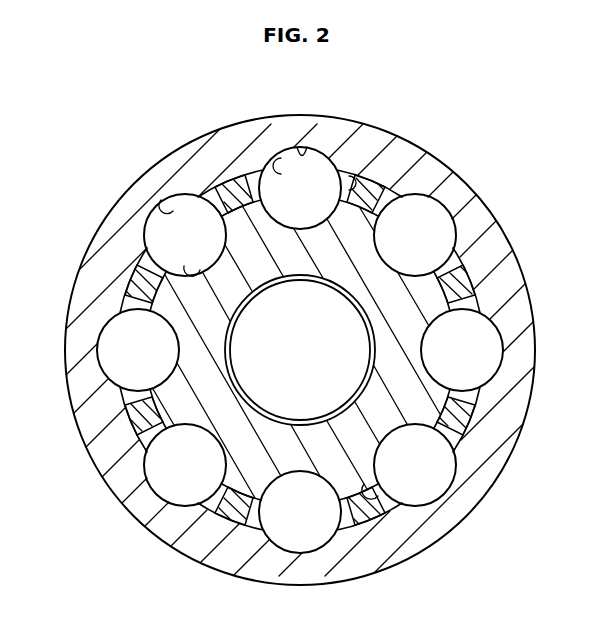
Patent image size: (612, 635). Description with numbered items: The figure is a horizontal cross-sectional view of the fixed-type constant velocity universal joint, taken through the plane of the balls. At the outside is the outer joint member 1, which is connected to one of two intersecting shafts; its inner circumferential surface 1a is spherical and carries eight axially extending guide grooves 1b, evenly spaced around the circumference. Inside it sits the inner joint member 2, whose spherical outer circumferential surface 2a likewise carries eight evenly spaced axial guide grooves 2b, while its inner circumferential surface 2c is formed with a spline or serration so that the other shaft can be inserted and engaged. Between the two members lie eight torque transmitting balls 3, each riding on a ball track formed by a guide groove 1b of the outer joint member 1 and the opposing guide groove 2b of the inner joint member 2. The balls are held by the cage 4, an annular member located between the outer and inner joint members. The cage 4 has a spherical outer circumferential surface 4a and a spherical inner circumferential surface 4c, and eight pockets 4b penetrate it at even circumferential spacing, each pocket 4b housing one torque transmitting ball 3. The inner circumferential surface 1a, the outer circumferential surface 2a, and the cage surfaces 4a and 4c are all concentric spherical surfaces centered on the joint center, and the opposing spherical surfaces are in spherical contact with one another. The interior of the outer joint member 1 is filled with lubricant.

The outer joint member 1 is at (188, 140).
The inner circumferential surface 1a is at (276, 160).
The guide groove 1b is at (298, 146).
The inner joint member 2 is at (176, 345).
The outer circumferential surface 2a is at (132, 298).
The guide groove 2b is at (186, 266).
The inner circumferential surface 2c is at (233, 345).
The torque transmitting ball 3 is at (334, 152).
The cage 4 is at (218, 522).
The outer circumferential surface 4a is at (368, 528).
The pocket 4b is at (364, 166).
The inner circumferential surface 4c is at (372, 494).